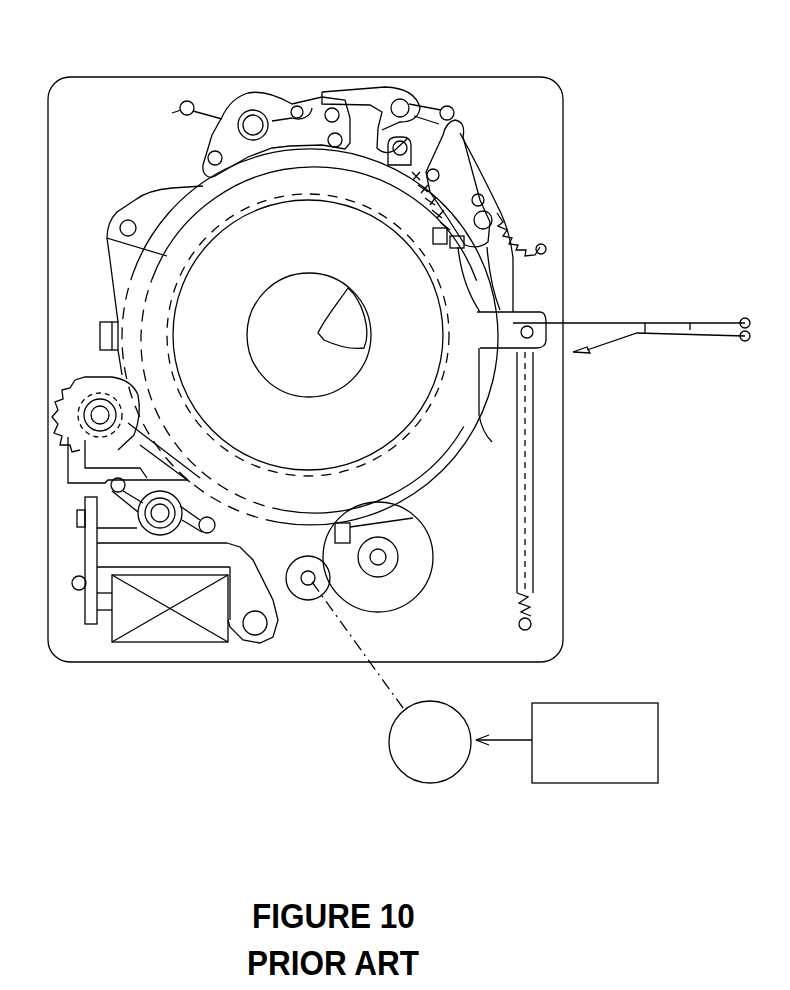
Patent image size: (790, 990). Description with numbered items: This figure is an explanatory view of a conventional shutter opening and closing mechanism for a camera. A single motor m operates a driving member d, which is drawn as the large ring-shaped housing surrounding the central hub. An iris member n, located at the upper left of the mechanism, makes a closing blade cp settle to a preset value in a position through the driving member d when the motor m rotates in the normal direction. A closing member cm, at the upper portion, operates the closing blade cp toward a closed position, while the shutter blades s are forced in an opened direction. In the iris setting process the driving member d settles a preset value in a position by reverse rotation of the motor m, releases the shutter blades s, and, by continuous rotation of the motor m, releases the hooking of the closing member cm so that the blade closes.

The iris member n is at (278, 110).
The closing member cm is at (408, 93).
The closing blade cp is at (364, 351).
The shutter blades s is at (366, 347).
The driving member d is at (484, 438).
The motor m is at (462, 710).